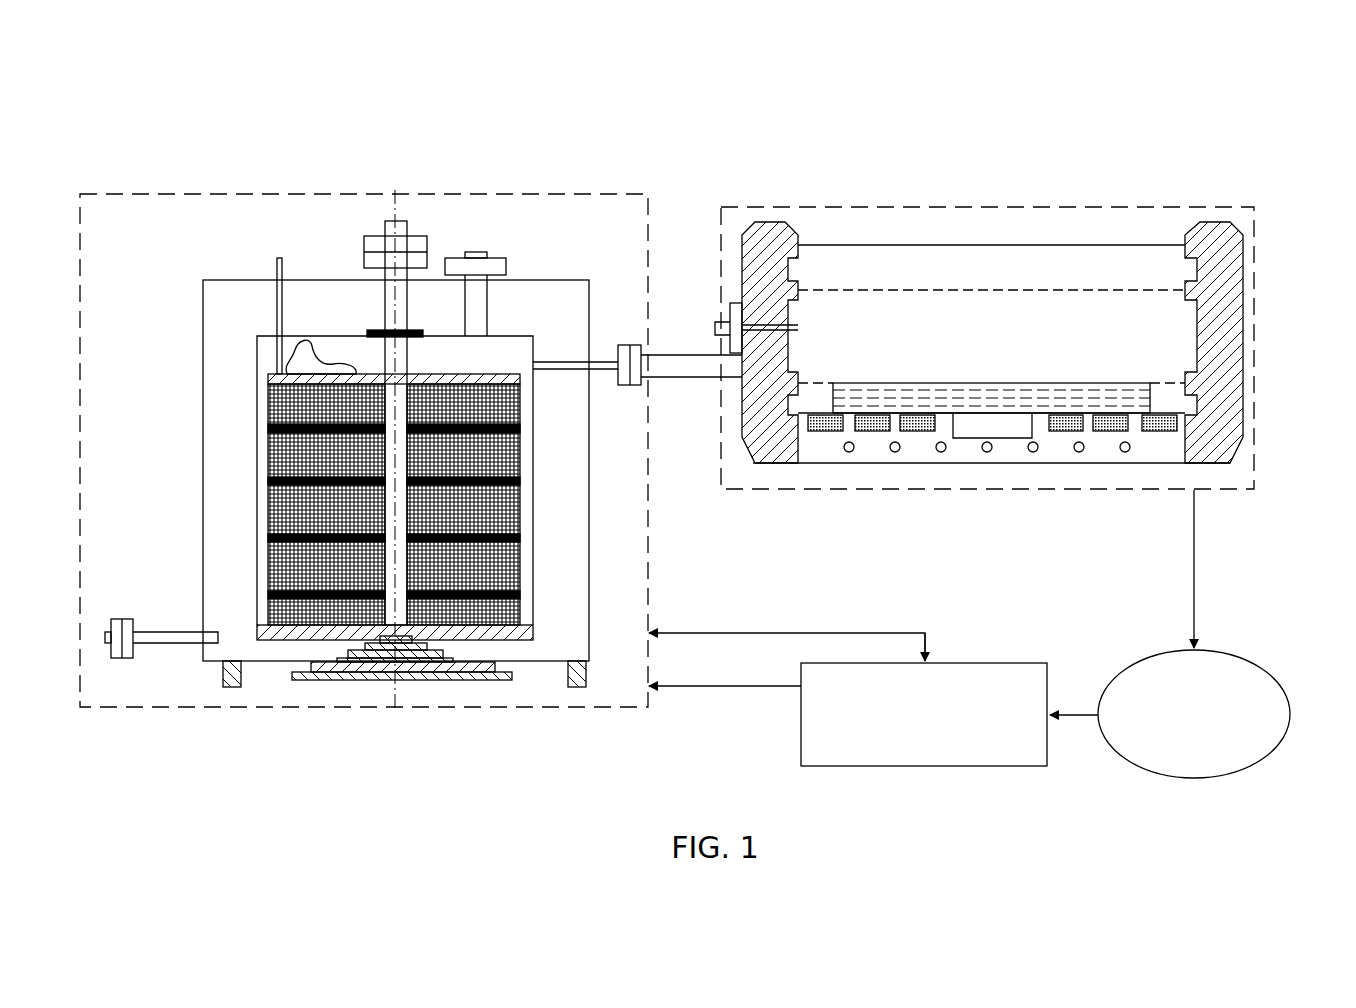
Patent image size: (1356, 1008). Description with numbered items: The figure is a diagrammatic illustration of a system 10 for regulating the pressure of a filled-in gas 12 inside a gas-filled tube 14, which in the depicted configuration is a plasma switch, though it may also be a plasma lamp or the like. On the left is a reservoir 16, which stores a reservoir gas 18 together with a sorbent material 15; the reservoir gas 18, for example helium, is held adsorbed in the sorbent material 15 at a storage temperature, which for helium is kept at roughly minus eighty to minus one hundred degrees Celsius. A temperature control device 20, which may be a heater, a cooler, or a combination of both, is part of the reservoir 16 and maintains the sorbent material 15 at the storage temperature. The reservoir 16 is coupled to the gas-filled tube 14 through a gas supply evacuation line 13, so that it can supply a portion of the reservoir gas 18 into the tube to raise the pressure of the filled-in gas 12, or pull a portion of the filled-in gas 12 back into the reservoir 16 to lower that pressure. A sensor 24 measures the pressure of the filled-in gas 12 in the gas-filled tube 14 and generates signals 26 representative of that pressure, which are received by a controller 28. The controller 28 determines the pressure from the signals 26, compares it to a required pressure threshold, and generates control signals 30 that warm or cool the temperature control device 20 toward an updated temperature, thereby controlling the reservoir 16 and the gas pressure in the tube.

The system 10 is at (1259, 99).
The filled-in gas 12 is at (971, 343).
The gas supply evacuation line 13 is at (662, 352).
The gas-filled tube 14 is at (992, 206).
The sorbent material 15 is at (268, 422).
The reservoir 16 is at (205, 194).
The reservoir gas 18 is at (520, 445).
The temperature control device 20 is at (472, 682).
The sensor 24 is at (1250, 656).
The signals 26 is at (1086, 722).
The controller 28 is at (977, 662).
The control signals 30 is at (745, 688).